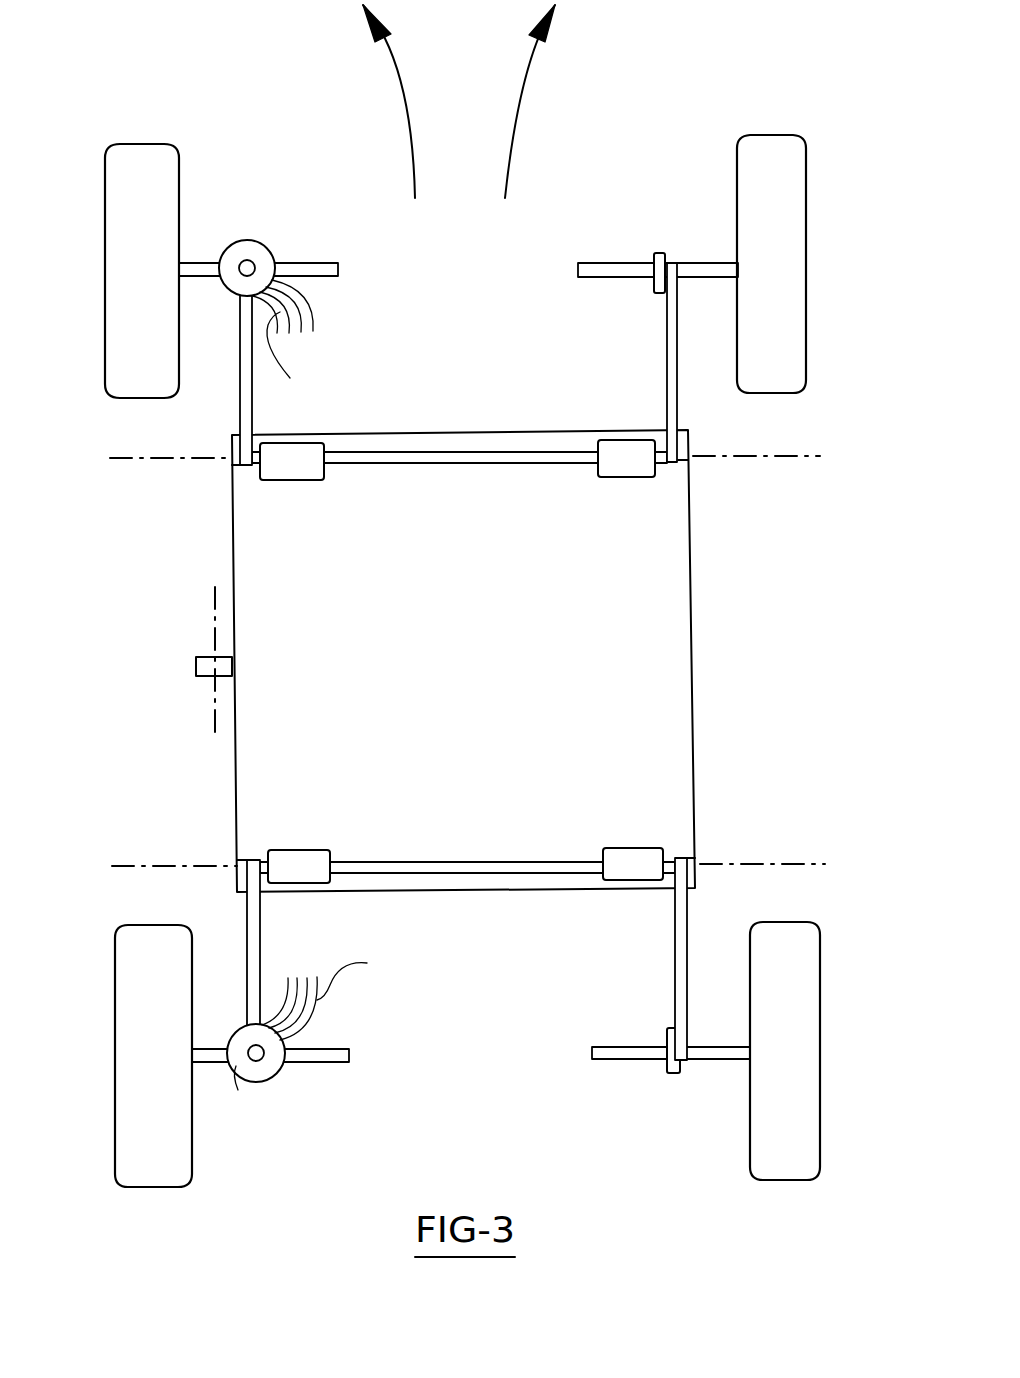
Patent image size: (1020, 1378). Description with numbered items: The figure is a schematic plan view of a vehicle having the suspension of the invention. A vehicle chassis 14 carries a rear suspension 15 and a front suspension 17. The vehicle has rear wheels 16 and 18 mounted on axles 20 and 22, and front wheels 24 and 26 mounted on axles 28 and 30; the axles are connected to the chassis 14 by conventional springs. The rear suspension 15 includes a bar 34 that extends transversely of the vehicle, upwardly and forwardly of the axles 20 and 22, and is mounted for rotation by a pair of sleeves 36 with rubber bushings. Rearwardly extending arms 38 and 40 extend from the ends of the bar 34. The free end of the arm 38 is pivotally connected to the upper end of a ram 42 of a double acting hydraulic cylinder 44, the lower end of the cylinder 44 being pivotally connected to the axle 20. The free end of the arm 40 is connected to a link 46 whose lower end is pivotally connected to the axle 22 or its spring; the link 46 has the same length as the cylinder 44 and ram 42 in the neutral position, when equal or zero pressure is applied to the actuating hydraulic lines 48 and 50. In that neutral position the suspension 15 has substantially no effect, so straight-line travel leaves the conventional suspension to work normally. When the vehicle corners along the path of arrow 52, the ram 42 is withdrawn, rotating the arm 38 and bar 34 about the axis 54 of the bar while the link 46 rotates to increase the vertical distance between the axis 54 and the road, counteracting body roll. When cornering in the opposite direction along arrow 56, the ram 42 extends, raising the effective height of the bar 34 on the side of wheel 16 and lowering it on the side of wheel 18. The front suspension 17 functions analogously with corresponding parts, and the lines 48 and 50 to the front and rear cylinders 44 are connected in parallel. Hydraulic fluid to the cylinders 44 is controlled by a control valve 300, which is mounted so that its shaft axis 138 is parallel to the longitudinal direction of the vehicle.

The vehicle chassis 14 is at (700, 721).
The rear suspension 15 is at (129, 830).
The rear wheel 16 is at (133, 1088).
The front suspension 17 is at (167, 481).
The rear wheel 18 is at (810, 1095).
The axle 20 is at (340, 1063).
The axle 22 is at (596, 1060).
The front wheel 24 is at (118, 228).
The front wheel 26 is at (787, 187).
The axle 28 is at (318, 262).
The axle 30 is at (612, 262).
The bar 34 is at (470, 465).
The sleeve 36 is at (290, 482).
The arm 38 is at (238, 400).
The arm 40 is at (665, 365).
The ram 42 is at (236, 1068).
The double acting hydraulic cylinder 44 is at (262, 245).
The link 46 is at (650, 292).
The hydraulic line 48 is at (313, 318).
The hydraulic line 50 is at (334, 656).
The arrow 52 is at (397, 85).
The axis 54 is at (179, 867).
The arrow 56 is at (514, 115).
The axis 138 is at (214, 596).
The control valve 300 is at (194, 686).